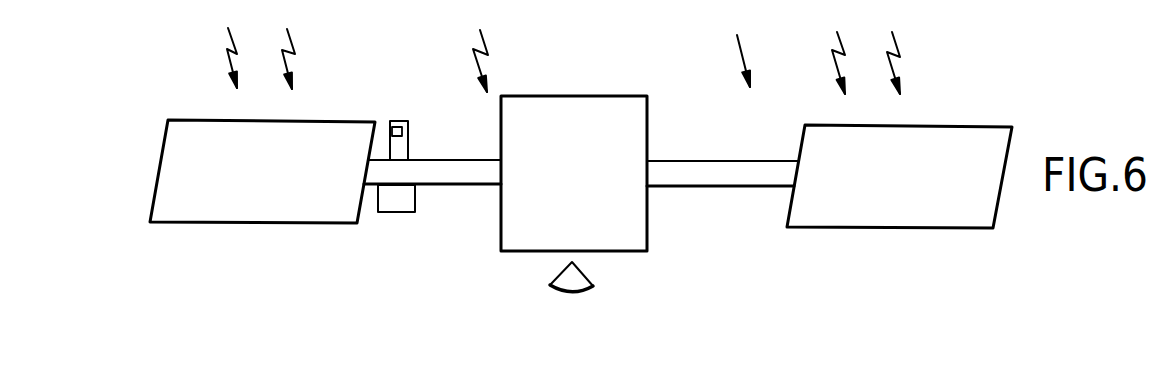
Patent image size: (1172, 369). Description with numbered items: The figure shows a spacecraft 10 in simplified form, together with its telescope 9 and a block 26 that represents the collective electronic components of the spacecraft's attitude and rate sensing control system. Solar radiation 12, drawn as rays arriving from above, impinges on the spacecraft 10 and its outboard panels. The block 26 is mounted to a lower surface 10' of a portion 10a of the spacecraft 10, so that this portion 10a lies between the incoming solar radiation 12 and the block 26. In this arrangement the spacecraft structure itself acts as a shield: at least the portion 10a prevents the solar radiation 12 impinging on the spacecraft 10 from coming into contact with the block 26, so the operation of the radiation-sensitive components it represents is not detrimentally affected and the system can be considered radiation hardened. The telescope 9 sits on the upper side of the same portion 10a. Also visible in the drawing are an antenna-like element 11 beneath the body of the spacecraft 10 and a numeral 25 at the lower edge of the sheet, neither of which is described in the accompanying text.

The telescope 9 is at (408, 128).
The spacecraft 10 is at (597, 157).
The portion of the spacecraft 10a is at (457, 168).
The lower surface 10' is at (579, 208).
The antenna 11 is at (595, 288).
The solar radiation 12 is at (226, 50).
The solar panel 25 is at (423, 361).
The electronic components 26 is at (398, 213).